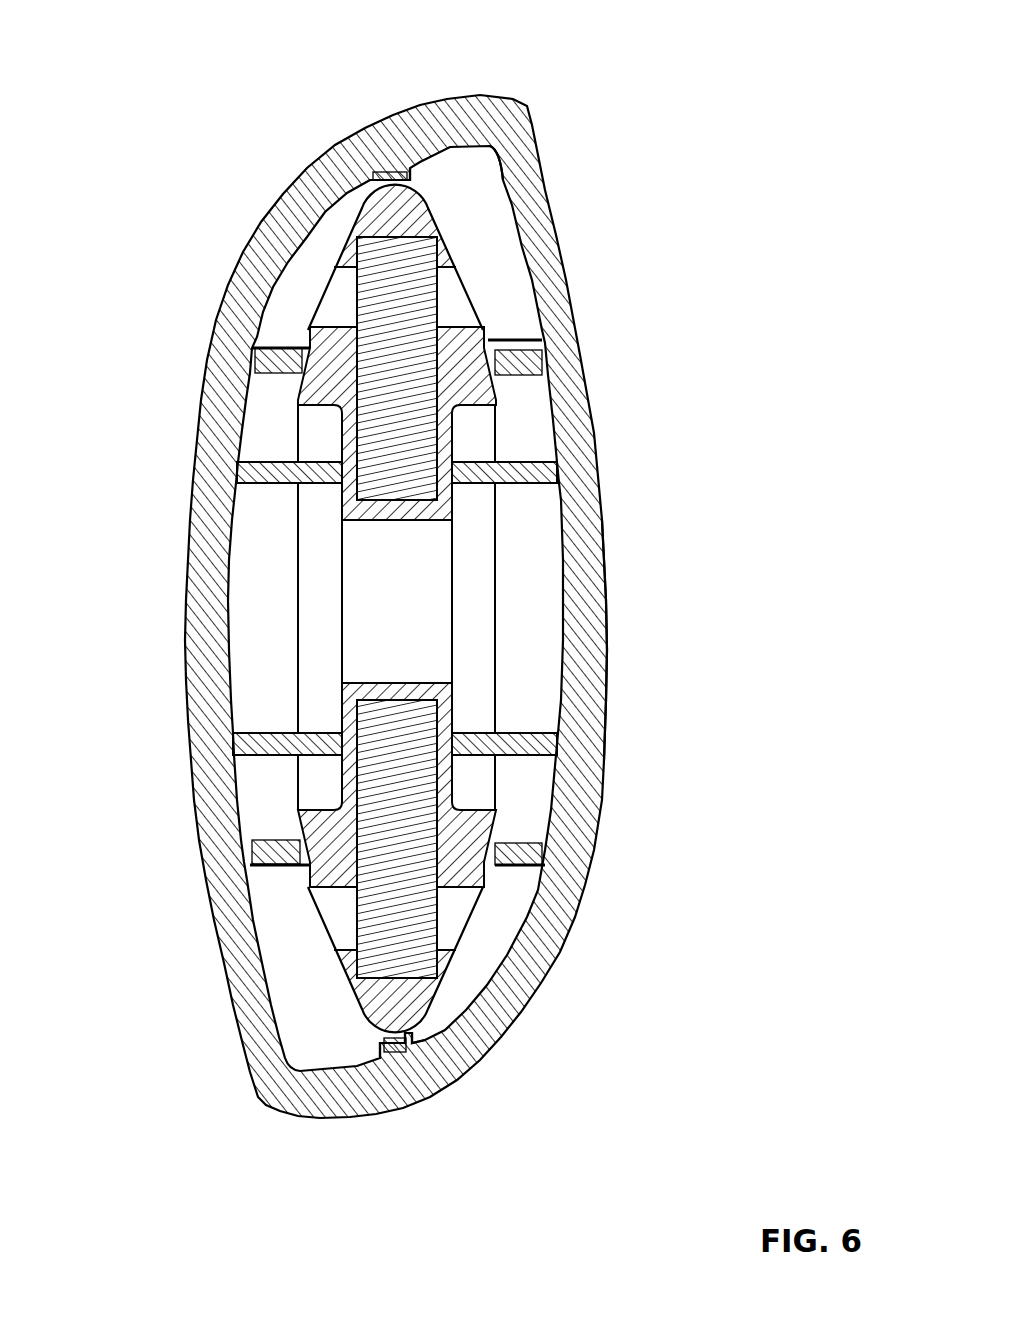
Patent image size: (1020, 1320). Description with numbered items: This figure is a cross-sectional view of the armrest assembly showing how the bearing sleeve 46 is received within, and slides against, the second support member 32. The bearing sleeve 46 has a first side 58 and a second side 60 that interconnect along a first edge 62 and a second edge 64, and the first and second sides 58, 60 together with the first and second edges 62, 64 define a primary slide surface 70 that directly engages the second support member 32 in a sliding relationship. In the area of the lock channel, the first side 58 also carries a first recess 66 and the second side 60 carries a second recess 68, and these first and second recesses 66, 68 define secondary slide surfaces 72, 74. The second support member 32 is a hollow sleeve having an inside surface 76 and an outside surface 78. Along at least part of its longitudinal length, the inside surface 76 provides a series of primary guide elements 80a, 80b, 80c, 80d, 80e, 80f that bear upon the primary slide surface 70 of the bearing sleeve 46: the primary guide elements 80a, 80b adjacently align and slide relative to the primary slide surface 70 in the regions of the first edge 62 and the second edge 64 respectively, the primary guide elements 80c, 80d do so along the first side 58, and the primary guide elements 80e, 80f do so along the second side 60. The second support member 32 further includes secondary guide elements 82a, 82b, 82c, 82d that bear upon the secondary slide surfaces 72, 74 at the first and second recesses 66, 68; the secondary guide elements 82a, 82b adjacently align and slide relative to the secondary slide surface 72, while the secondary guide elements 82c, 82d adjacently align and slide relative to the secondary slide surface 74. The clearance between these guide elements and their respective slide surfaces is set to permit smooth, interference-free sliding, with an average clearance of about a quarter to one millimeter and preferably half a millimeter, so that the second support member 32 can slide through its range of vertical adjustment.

The second support member 32 is at (553, 243).
The bearing sleeve 46 is at (473, 393).
The first side 58 is at (298, 393).
The second side 60 is at (490, 341).
The first edge 62 is at (372, 177).
The second edge 64 is at (423, 1022).
The first recess 66 is at (174, 607).
The second recess 68 is at (627, 607).
The primary slide surface 70 is at (277, 338).
The secondary slide surface 72 is at (330, 500).
The secondary slide surface 74 is at (455, 503).
The inside surface 76 is at (498, 183).
The outside surface 78 is at (606, 664).
The primary guide element 80a is at (410, 172).
The primary guide element 80b is at (385, 1040).
The primary guide element 80c is at (270, 372).
The primary guide element 80d is at (270, 853).
The primary guide element 80e is at (512, 387).
The primary guide element 80f is at (528, 847).
The secondary guide element 82a is at (290, 476).
The secondary guide element 82b is at (270, 747).
The secondary guide element 82c is at (523, 475).
The secondary guide element 82d is at (510, 743).